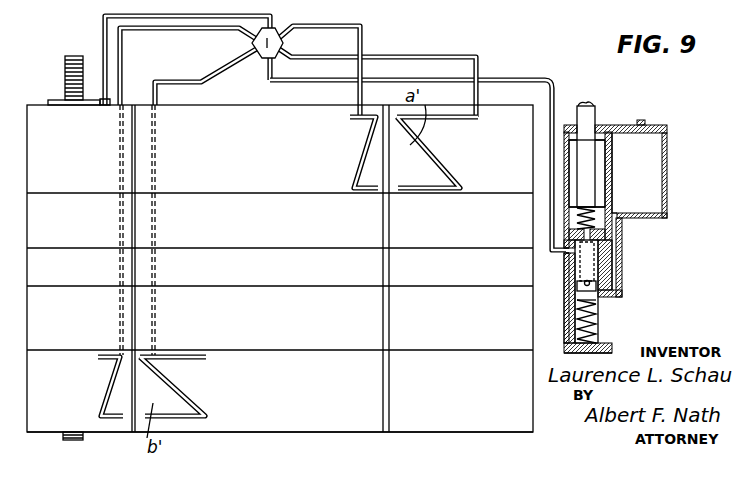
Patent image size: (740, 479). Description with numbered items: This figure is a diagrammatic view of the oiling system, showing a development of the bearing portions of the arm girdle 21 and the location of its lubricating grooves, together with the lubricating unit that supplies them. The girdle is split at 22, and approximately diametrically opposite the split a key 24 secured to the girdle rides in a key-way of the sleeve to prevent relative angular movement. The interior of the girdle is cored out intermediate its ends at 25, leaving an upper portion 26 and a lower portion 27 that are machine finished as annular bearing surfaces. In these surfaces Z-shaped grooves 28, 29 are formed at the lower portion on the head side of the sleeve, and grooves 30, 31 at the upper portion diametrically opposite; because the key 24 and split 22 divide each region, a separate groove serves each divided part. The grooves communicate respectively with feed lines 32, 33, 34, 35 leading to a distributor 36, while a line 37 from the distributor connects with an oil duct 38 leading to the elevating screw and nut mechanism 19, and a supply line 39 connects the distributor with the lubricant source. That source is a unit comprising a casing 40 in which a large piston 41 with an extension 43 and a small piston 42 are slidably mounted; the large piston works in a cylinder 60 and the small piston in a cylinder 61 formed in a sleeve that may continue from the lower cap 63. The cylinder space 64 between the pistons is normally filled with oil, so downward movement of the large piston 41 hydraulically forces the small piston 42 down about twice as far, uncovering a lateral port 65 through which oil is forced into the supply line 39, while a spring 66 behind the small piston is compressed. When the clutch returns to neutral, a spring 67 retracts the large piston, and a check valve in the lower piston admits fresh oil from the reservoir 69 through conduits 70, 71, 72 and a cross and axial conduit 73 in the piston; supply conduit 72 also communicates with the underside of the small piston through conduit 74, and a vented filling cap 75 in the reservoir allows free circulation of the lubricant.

The elevating mechanism 19 is at (65, 61).
The girdle portion 21 is at (40, 108).
The split 22 is at (383, 267).
The key 24 is at (136, 272).
The cored out portion 25 is at (280, 281).
The upper portion 26 is at (280, 167).
The lower portion 27 is at (280, 406).
The Z-shaped groove 28 is at (108, 389).
The Z-shaped groove 29 is at (178, 388).
The Z-shaped groove 30 is at (356, 148).
The Z-shaped groove 31 is at (430, 155).
The feed line 32 is at (124, 49).
The feed line 33 is at (207, 79).
The feed line 34 is at (364, 44).
The feed line 35 is at (425, 58).
The distributor 36 is at (284, 44).
The line 37 is at (103, 26).
The oil duct 38 is at (105, 108).
The supply line 39 is at (539, 80).
The casing 40 is at (564, 162).
The large piston 41 is at (600, 183).
The small piston 42 is at (612, 256).
The extension 43 is at (596, 113).
The cylinder 60 is at (575, 132).
The cylinder 61 is at (566, 345).
The lower cap 63 is at (570, 329).
The cylinder space 64 is at (578, 213).
The lateral port 65 is at (564, 254).
The spring 66 is at (578, 312).
The spring 67 is at (575, 226).
The reservoir 69 is at (645, 162).
The conduit 70 is at (623, 232).
The conduit 71 is at (612, 291).
The supply conduit 72 is at (623, 297).
The cross and axial conduit 73 is at (577, 284).
The conduit 74 is at (612, 320).
The vented filling cap 75 is at (645, 125).